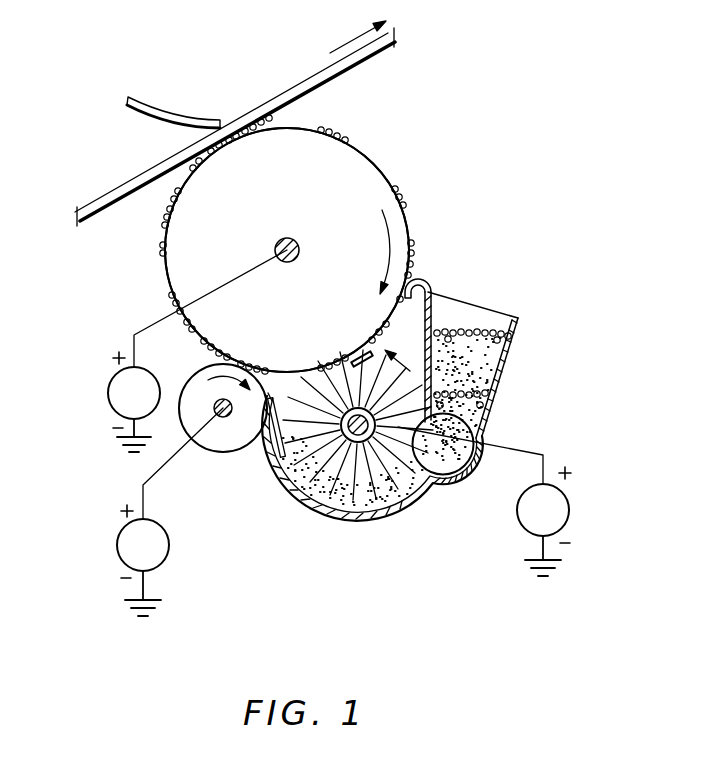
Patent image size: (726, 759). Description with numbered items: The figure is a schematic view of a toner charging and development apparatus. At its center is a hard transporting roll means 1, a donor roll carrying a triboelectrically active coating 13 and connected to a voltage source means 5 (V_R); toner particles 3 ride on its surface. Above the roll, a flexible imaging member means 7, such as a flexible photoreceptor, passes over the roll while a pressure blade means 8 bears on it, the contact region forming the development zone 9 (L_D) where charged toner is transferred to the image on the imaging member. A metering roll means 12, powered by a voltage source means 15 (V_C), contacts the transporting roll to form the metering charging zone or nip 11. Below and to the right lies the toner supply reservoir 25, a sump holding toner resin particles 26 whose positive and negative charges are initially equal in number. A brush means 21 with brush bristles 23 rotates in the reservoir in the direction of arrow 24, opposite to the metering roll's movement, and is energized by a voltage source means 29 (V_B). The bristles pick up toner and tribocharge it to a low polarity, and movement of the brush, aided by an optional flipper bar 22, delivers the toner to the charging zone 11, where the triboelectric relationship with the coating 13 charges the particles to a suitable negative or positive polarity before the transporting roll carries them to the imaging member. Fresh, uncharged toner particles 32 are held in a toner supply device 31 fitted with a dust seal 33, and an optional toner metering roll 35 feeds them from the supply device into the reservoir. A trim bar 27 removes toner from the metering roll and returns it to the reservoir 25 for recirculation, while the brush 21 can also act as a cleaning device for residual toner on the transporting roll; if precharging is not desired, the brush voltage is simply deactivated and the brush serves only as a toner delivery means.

The hard transporting roll means 1 is at (370, 187).
The toner particles 3 is at (338, 131).
The voltage source means 5 is at (110, 383).
The flexible imaging member means 7 is at (105, 200).
The pressure blade means 8 is at (175, 112).
The development zone 9 is at (243, 133).
The metering charging zone 11 is at (245, 363).
The metering roll means 12 is at (217, 455).
The triboelectrically active coating 13 is at (358, 157).
The voltage source means 15 is at (118, 538).
The brush means 21 is at (343, 497).
The flipper bar 22 is at (363, 348).
The brush bristles 23 is at (281, 452).
The arrow 24 is at (398, 372).
The toner supply reservoir 25 is at (310, 503).
The toner resin particles 26 is at (413, 502).
The trim bar 27 is at (272, 400).
The voltage source means 29 is at (571, 511).
The toner supply device 31 is at (513, 346).
The toner particles 32 is at (470, 330).
The dust seal 33 is at (423, 285).
The toner metering roll 35 is at (466, 482).